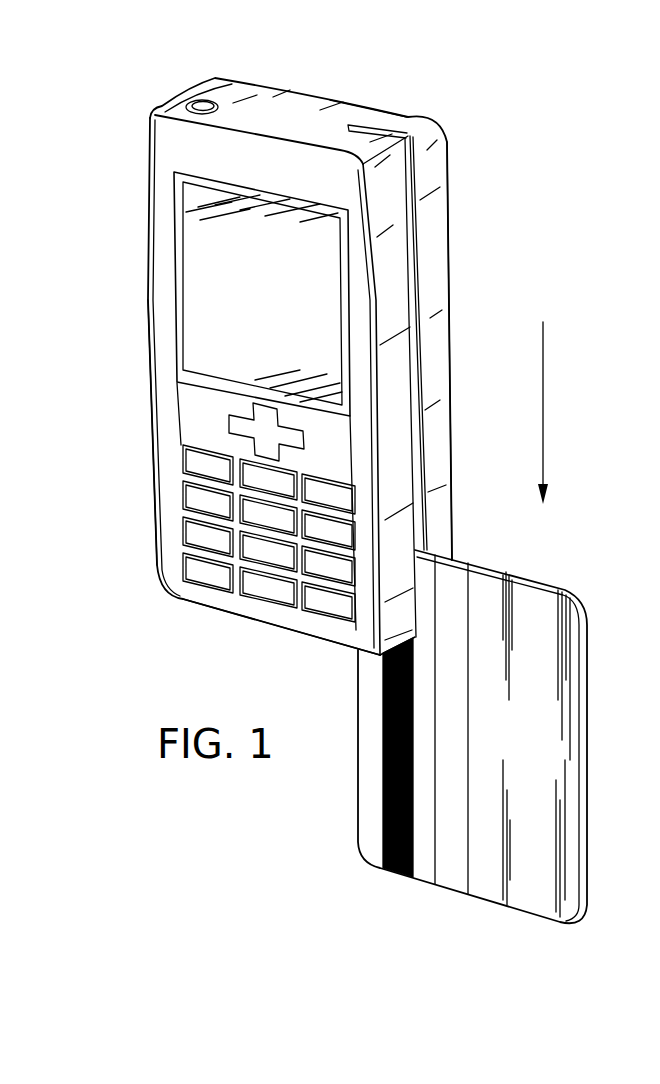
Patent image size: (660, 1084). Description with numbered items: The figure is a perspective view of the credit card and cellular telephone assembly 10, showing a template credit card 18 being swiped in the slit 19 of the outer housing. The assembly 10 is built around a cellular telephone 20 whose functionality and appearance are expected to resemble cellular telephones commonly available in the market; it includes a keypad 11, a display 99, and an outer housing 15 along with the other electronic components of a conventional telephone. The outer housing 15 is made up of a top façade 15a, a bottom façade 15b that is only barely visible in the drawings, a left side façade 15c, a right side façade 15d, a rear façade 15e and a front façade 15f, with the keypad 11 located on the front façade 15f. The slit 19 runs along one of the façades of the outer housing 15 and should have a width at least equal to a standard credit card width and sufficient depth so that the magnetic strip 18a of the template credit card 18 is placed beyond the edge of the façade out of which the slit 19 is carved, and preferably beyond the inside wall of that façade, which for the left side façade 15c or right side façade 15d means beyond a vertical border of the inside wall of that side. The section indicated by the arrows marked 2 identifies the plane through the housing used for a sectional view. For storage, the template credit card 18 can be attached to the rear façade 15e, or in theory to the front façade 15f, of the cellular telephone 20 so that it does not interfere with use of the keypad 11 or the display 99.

The credit card and cellular telephone assembly 10 is at (482, 91).
The keypad 11 is at (333, 502).
The outer housing 15 is at (362, 302).
The top façade 15a is at (302, 97).
The bottom façade 15b is at (247, 628).
The left side façade 15c is at (157, 476).
The right side façade 15d is at (400, 493).
The rear façade 15e is at (368, 103).
The front façade 15f is at (370, 336).
The template credit card 18 is at (584, 770).
The magnetic strip 18a is at (400, 873).
The slit 19 is at (410, 118).
The cellular telephone 20 is at (445, 177).
The section line 2- 2 is at (117, 292).
The display 99 is at (202, 253).